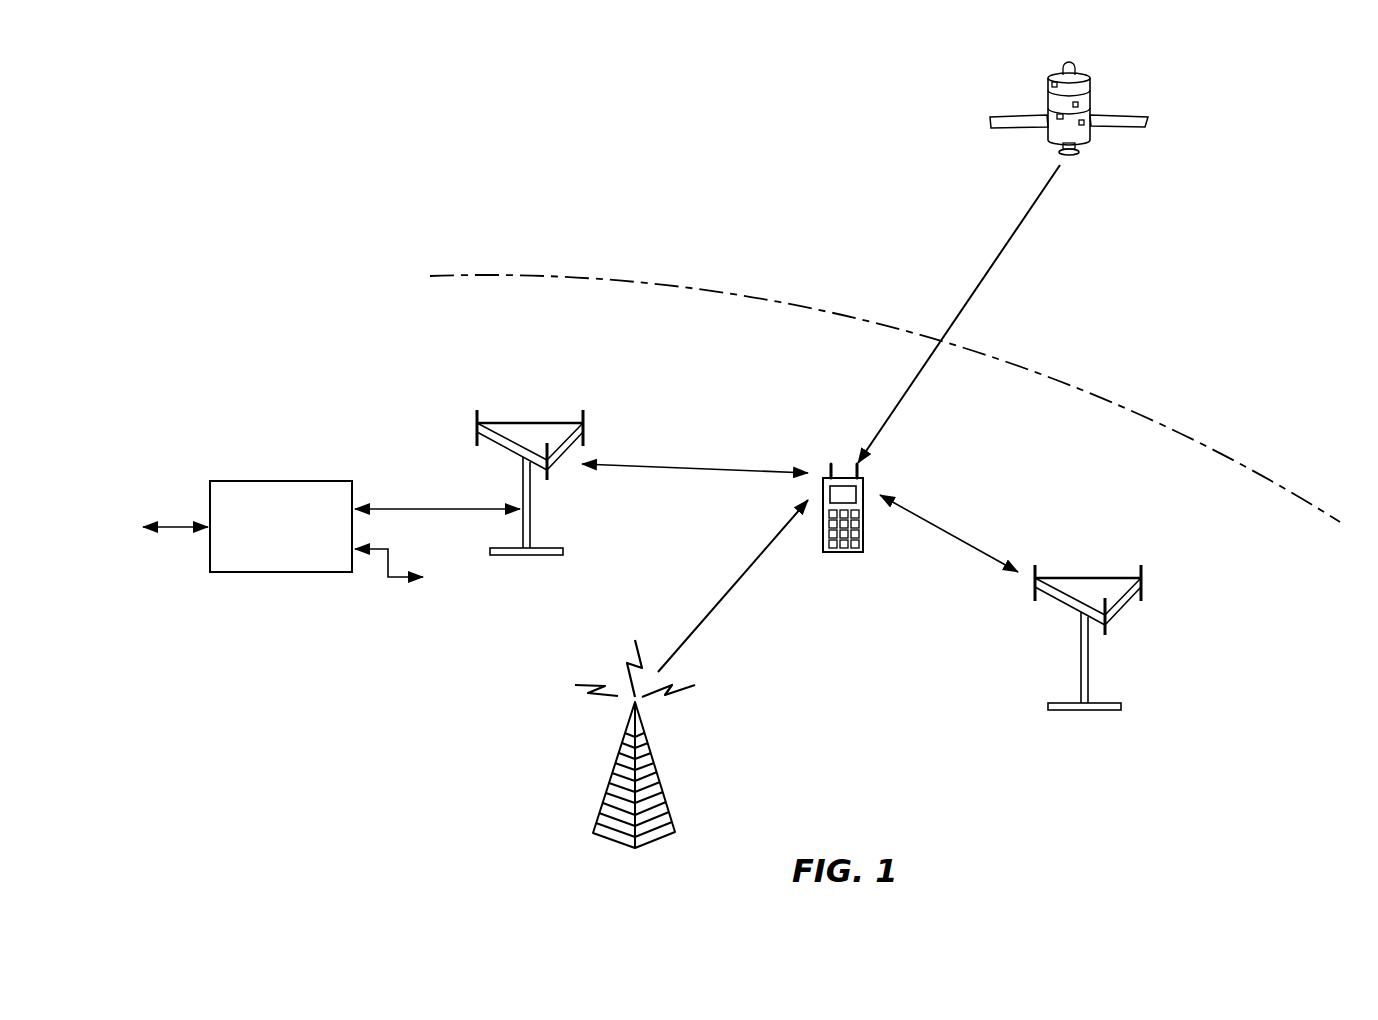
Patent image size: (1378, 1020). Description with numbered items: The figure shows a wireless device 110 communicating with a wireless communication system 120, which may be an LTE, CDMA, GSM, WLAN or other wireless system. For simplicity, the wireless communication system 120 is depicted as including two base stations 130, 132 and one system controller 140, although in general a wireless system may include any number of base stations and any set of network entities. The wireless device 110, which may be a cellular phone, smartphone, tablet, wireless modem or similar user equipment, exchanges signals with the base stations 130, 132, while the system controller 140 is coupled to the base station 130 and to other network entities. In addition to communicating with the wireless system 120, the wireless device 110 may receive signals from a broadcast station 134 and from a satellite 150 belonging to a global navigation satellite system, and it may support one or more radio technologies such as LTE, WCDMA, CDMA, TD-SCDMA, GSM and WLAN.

The wireless device 110 is at (838, 552).
The wireless communication system 120 is at (452, 364).
The base station 130 is at (505, 423).
The base station 132 is at (1062, 578).
The broadcast station 134 is at (655, 770).
The system controller 140 is at (280, 481).
The satellite 150 is at (1124, 112).